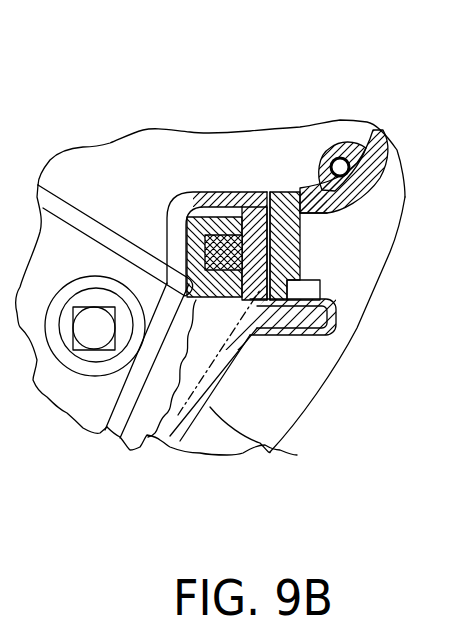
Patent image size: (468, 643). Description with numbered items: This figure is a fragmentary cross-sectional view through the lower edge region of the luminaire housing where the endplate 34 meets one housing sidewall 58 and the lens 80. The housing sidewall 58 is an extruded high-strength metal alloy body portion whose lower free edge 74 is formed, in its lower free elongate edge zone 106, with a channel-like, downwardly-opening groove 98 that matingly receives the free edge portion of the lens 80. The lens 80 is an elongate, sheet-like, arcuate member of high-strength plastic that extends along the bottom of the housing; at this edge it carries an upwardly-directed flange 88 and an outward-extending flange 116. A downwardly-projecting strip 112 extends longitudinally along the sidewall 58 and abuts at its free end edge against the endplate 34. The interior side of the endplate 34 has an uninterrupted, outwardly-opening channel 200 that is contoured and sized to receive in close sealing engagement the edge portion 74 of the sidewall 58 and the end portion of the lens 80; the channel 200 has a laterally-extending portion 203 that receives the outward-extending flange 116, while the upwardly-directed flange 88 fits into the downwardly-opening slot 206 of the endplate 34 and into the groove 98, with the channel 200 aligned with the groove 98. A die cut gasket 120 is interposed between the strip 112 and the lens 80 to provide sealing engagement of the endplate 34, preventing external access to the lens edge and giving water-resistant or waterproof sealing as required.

The endplate 34 is at (292, 150).
The groove 98 is at (220, 200).
The lower free elongate edge zone 106 is at (238, 207).
The slot 206 is at (258, 207).
The downwardly-projecting strip 112 is at (299, 247).
The laterally-extending portion 203 is at (300, 290).
The lower free edge 74 is at (317, 212).
The upwardly-directed flange 88 is at (259, 259).
The housing sidewall 58 is at (405, 195).
The die cut gasket 120 is at (305, 315).
The outward-extending flange 116 is at (297, 318).
The channel 200 is at (223, 453).
The lens 80 is at (270, 452).